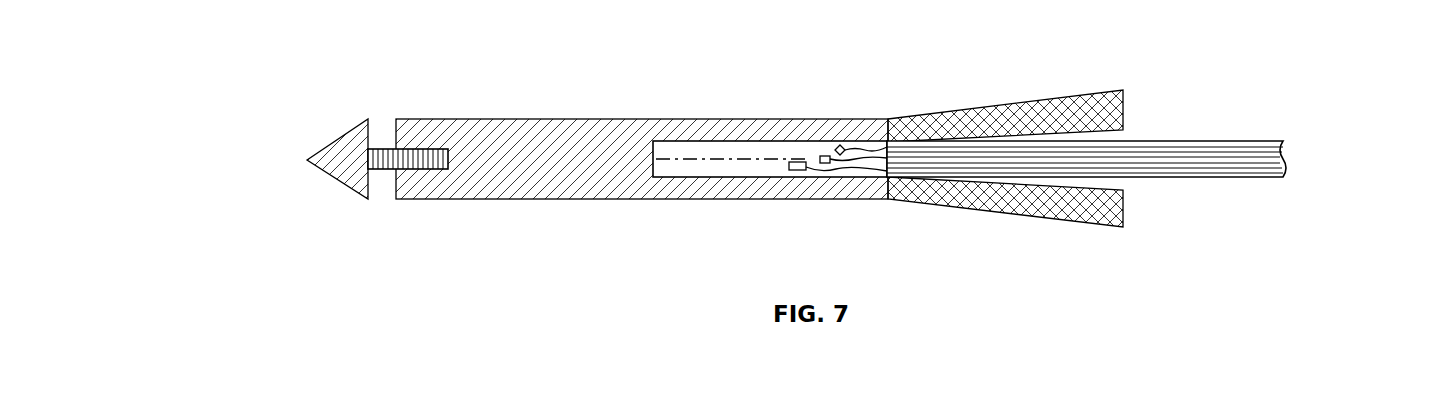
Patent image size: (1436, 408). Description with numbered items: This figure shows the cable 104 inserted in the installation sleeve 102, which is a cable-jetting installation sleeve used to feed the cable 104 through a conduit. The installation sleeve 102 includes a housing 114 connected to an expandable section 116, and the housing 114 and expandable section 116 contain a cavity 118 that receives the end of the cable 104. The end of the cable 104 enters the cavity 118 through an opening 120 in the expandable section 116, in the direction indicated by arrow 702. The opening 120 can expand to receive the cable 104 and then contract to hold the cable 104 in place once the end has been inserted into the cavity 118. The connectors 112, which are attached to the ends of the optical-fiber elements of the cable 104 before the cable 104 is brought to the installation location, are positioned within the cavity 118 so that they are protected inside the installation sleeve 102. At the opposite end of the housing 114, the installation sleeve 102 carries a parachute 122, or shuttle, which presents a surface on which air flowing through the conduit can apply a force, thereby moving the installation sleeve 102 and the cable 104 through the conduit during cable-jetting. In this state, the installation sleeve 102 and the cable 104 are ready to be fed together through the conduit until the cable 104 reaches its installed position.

The installation sleeve 102 is at (684, 43).
The cable 104 is at (1194, 80).
The connectors 112 is at (838, 148).
The housing 114 is at (580, 198).
The expandable section 116 is at (1123, 227).
The cavity 118 is at (653, 147).
The opening 120 is at (1122, 183).
The parachute 122 is at (337, 142).
The arrow 702 is at (1230, 108).